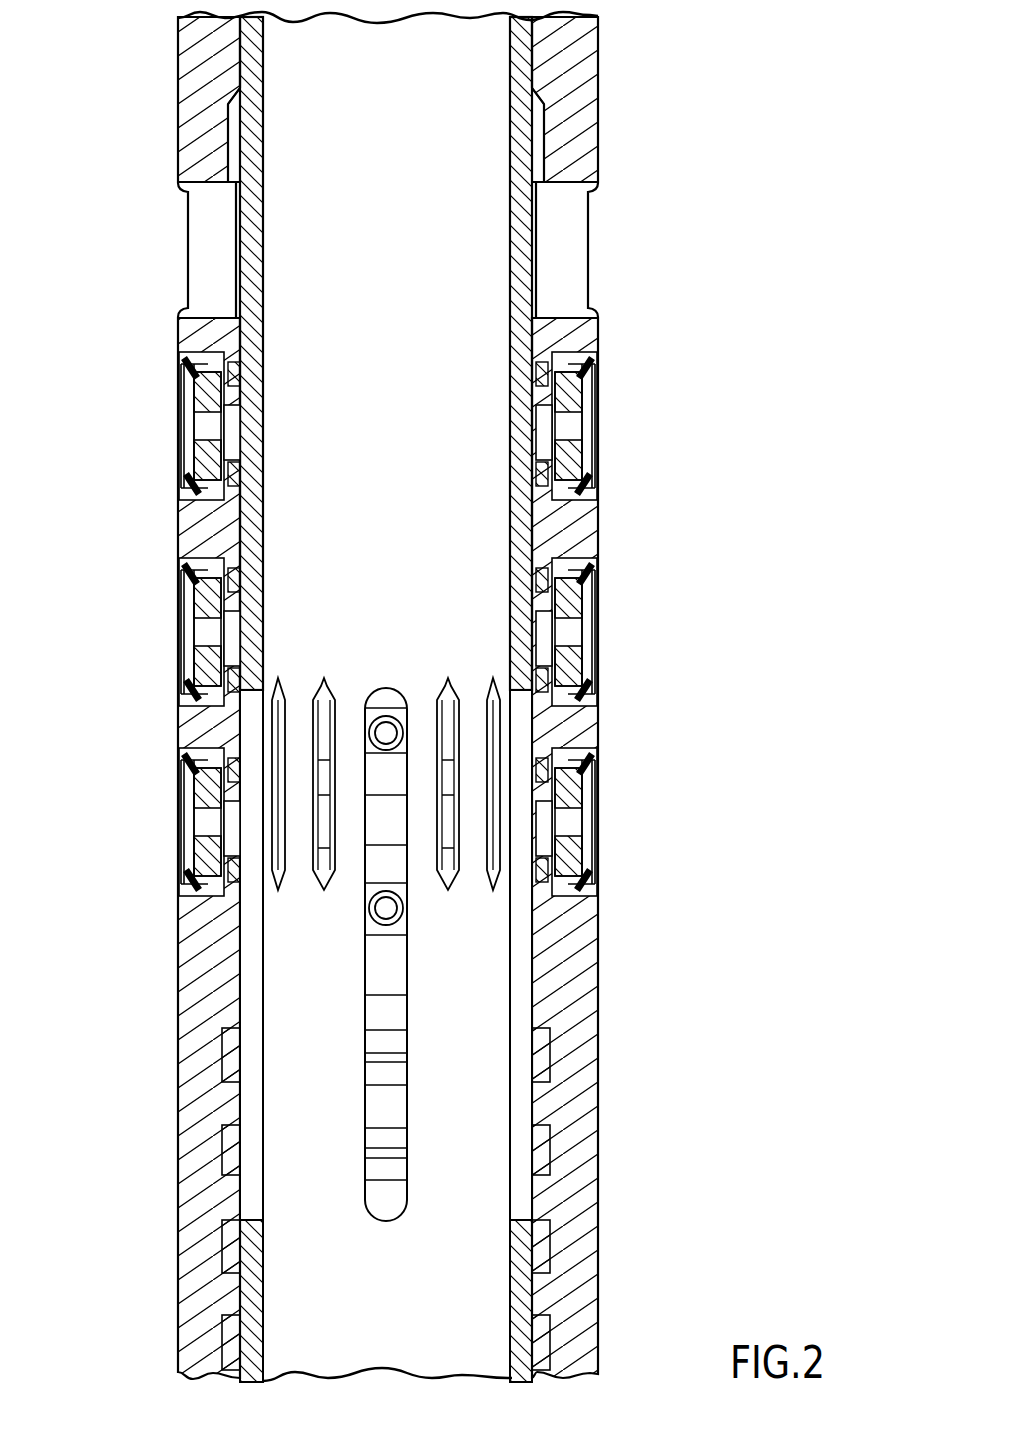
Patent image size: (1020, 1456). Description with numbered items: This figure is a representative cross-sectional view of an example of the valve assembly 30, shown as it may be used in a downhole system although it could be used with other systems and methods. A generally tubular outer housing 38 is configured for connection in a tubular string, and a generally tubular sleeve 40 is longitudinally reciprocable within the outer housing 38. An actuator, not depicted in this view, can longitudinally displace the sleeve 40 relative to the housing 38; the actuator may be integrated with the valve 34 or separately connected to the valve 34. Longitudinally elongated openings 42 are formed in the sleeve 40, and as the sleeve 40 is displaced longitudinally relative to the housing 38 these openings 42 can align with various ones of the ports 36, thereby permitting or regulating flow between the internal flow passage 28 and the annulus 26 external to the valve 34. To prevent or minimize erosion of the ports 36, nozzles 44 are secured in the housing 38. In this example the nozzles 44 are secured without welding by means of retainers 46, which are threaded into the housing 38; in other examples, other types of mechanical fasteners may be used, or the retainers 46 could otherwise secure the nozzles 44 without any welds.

The annulus 26 is at (70, 322).
The flow passage 28 is at (380, 178).
The valve assembly 30 is at (741, 84).
The valve 34 is at (180, 958).
The ports 36 is at (232, 418).
The outer housing 38 is at (598, 945).
The sleeve 40 is at (226, 147).
The openings 42 is at (250, 722).
The nozzles 44 is at (200, 458).
The retainers 46 is at (186, 362).